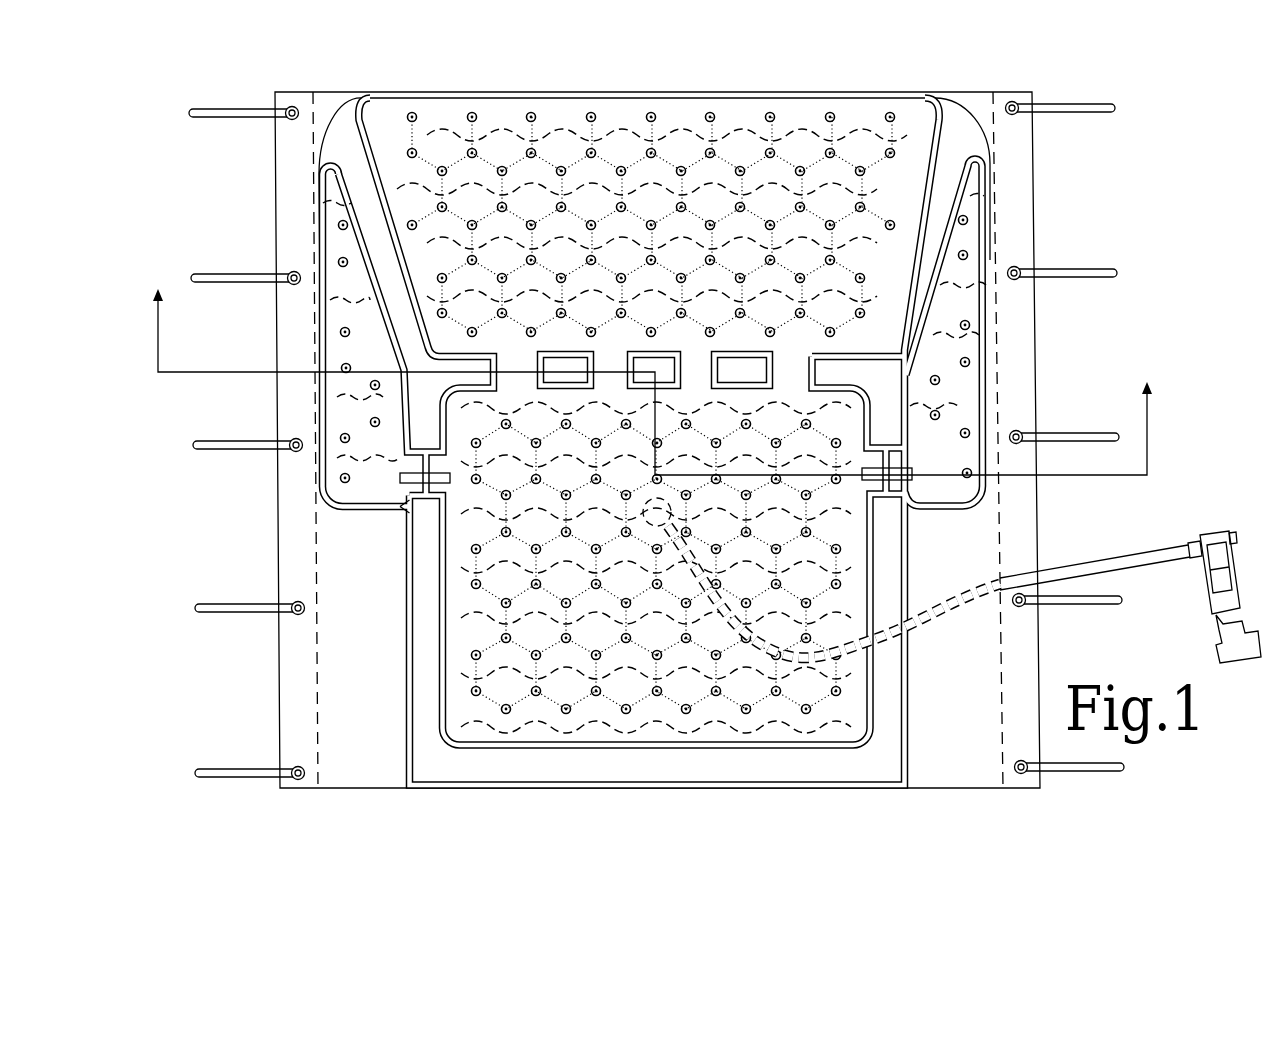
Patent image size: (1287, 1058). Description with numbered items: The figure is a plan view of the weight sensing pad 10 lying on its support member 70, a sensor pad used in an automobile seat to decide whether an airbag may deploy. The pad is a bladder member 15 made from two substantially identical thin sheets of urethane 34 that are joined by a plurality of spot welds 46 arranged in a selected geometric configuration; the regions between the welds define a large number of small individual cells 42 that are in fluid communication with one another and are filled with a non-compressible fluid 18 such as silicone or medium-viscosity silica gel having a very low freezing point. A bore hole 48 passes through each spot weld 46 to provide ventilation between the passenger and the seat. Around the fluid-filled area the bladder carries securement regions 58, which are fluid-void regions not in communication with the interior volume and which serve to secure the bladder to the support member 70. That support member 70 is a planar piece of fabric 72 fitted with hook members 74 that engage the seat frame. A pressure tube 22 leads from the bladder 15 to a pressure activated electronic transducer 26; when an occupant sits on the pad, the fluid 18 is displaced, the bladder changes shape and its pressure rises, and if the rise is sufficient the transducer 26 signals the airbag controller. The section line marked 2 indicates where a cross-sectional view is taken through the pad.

The weight sensing pad 10 is at (703, 425).
The support member 70 is at (1168, 135).
The non-compressible fluid 18 is at (1003, 263).
The fabric 72 is at (357, 740).
The bladder member 15 is at (996, 188).
The individual cells 42 is at (316, 99).
The hook member 74 is at (255, 603).
The securement regions 58 is at (655, 441).
The urethane sheet 34 is at (887, 385).
The section line 2 is at (652, 363).
The bore hole 48 is at (770, 112).
The spot welds 46 is at (890, 112).
The pressure tube 22 is at (1086, 562).
The pressure activated electronic transducer 26 is at (1207, 530).